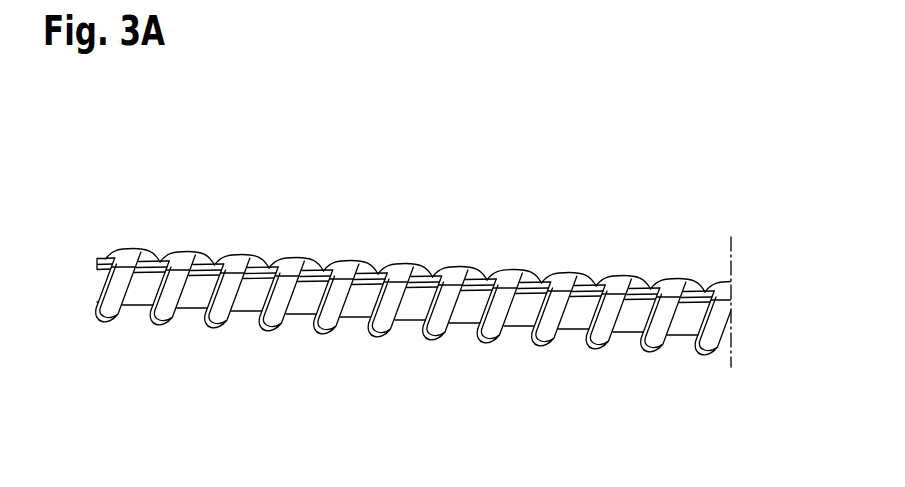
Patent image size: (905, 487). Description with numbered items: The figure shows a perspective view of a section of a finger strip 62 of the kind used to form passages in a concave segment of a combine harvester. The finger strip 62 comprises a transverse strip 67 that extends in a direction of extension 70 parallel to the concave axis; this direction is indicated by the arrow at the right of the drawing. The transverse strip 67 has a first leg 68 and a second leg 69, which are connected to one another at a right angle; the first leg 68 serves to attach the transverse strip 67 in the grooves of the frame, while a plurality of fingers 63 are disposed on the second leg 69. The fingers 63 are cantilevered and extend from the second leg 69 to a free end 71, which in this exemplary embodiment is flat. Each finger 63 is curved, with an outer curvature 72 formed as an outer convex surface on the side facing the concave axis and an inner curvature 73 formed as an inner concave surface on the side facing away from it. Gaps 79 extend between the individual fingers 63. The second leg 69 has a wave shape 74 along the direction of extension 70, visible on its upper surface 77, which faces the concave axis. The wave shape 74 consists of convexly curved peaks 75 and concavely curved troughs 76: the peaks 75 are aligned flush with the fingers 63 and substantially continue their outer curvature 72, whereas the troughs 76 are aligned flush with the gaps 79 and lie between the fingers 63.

The finger strip 62 is at (108, 149).
The finger 63 is at (290, 316).
The transverse strip 67 is at (172, 273).
The first leg 68 is at (151, 262).
The second leg 69 is at (215, 263).
The direction of extension 70 is at (733, 310).
The free end 71 is at (151, 312).
The outer curvature 72 is at (497, 308).
The inner curvature 73 is at (487, 340).
The wave shape 74 is at (413, 234).
The peak 75 is at (406, 272).
The trough 76 is at (488, 279).
The upper surface 77 is at (571, 275).
The gap 79 is at (198, 314).